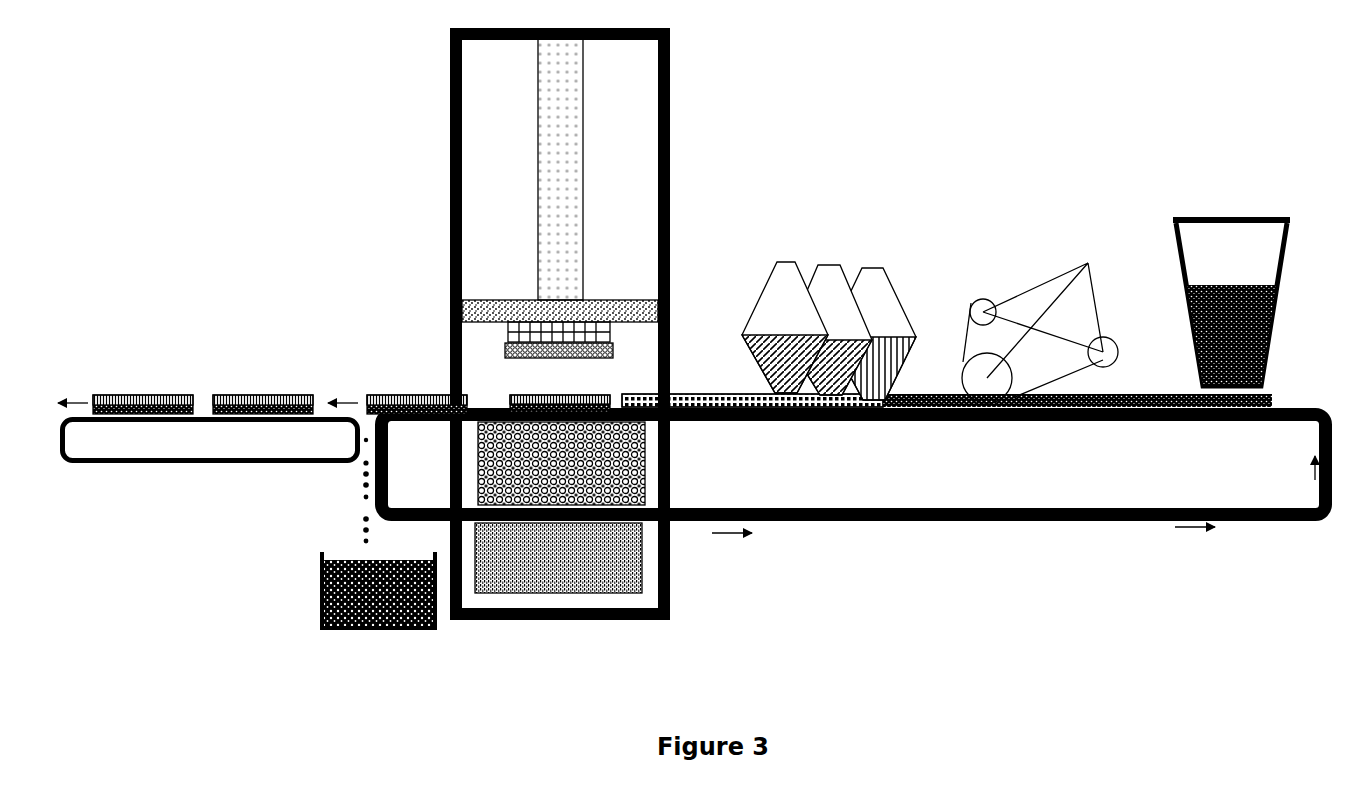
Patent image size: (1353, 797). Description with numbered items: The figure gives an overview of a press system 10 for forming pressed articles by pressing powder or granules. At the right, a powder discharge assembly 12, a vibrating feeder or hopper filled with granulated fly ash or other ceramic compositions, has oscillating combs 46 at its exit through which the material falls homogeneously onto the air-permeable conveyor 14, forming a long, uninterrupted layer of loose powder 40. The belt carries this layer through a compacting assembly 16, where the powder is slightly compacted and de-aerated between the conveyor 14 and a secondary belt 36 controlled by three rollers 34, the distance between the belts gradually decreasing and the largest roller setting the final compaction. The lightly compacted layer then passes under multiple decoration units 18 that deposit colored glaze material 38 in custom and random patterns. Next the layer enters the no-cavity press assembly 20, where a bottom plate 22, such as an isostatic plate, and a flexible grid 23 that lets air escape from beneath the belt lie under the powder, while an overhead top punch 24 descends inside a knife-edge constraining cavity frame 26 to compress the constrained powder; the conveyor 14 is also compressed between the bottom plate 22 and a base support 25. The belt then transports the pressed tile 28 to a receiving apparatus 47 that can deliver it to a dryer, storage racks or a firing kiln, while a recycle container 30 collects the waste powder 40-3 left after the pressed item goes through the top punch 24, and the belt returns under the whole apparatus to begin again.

The system 10 is at (699, 337).
The powder discharge assembly 12 is at (1257, 279).
The conveyor 14 is at (968, 522).
The compacting assembly 16 is at (1020, 269).
The decoration unit 18 is at (871, 266).
The no-cavity press assembly 20 is at (544, 324).
The bottom plate 22 is at (643, 460).
The flexible grid 23 is at (947, 376).
The top punch 24 is at (505, 331).
The base support 25 is at (635, 563).
The knife-edge constraining cavity frame 26 is at (505, 352).
The tile 28 is at (146, 396).
The recycle container 30 is at (318, 590).
The rollers 34 is at (1050, 317).
The secondary belt 36 is at (965, 335).
The colored glaze material 38 is at (720, 395).
The powder 40 is at (562, 403).
The waste powder 40-3 is at (350, 507).
The oscillating combs 46 is at (1268, 369).
The receiving apparatus 47 is at (130, 465).